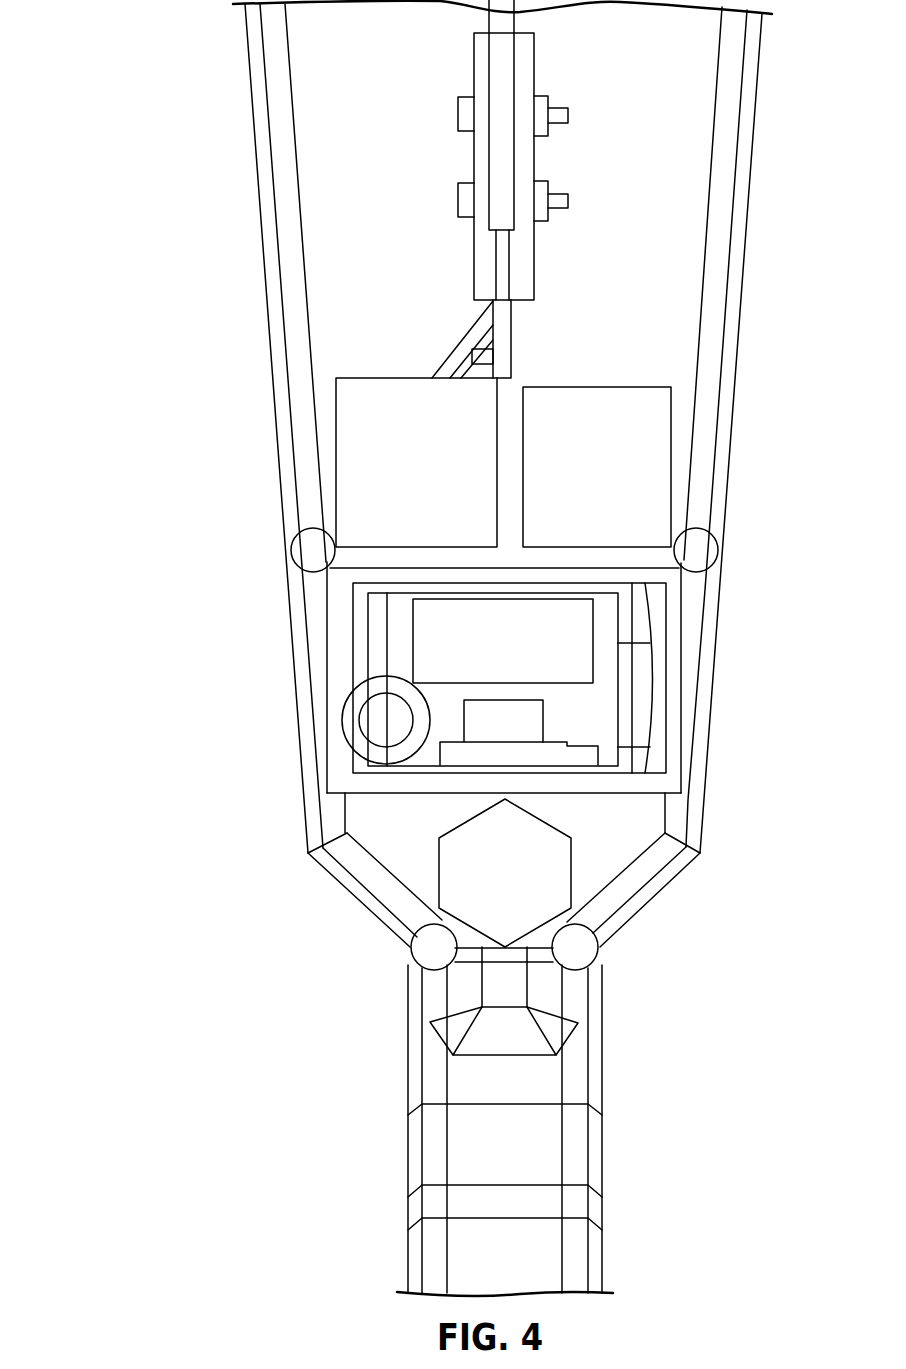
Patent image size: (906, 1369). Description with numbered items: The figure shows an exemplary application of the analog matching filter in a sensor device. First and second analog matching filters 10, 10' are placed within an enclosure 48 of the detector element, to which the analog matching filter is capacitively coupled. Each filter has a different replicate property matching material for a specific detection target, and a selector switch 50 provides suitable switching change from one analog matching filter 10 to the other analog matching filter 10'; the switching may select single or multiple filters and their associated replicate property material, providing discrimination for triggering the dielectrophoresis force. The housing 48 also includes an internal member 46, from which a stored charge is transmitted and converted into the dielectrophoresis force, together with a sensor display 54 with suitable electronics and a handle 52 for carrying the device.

The enclosure 48 is at (164, 106).
The first analog matching filter 10 is at (416, 439).
The second analog matching filter 10' is at (597, 440).
The internal member 46 is at (468, 344).
The sensor display 54 is at (485, 643).
The selector switch 50 is at (518, 873).
The handle 52 is at (485, 1127).